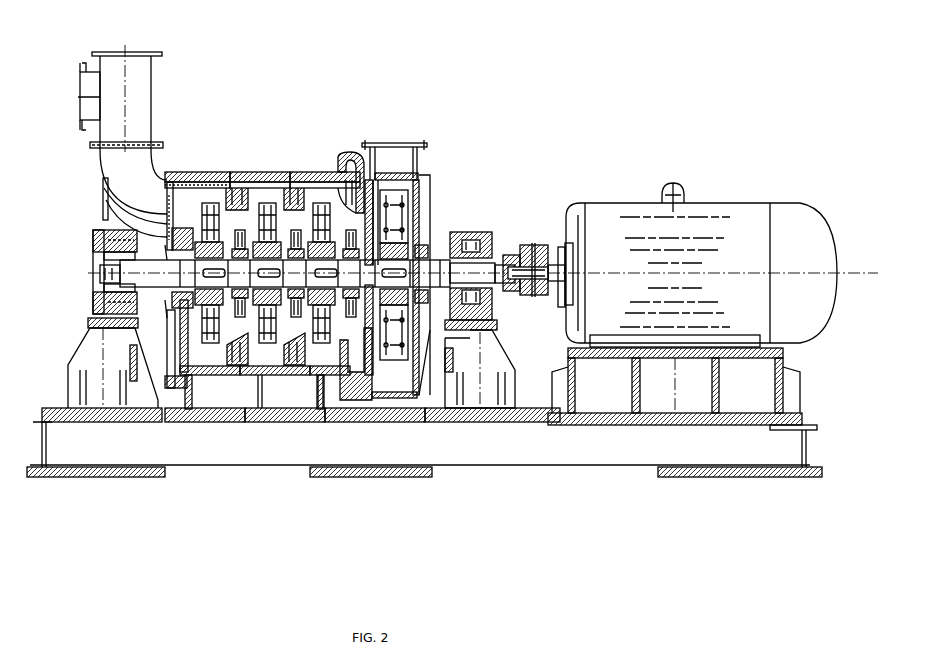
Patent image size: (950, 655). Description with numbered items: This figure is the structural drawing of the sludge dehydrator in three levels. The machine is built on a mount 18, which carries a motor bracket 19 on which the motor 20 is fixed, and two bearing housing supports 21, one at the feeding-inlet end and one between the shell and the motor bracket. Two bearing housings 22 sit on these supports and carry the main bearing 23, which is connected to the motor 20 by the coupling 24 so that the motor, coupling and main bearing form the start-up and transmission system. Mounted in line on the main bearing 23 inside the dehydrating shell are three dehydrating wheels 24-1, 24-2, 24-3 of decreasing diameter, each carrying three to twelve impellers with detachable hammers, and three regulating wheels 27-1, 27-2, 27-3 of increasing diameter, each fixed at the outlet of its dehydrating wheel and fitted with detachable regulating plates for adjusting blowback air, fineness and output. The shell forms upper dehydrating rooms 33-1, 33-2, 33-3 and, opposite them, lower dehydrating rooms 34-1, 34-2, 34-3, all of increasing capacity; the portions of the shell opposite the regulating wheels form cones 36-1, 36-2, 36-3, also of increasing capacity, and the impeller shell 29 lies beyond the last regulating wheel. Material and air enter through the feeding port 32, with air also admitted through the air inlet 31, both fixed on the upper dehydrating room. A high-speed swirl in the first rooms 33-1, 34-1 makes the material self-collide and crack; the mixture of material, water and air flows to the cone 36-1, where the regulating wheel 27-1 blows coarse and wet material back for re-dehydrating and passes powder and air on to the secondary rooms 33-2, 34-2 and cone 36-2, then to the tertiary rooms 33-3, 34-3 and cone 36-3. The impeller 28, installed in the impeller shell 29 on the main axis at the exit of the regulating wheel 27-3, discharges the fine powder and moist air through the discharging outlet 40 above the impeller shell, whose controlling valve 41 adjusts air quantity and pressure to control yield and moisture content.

The mount 18 is at (806, 447).
The motor bracket 19 is at (775, 392).
The motor 20 is at (736, 213).
The bearing housings support 21 is at (509, 358).
The bearing housings 22 is at (476, 232).
The main bearing 23 is at (441, 256).
The coupling 24 is at (526, 246).
The dehydrating wheel 24-1 is at (207, 229).
The dehydrating wheel 24-2 is at (267, 229).
The dehydrating wheel 24-3 is at (326, 229).
The regulating wheel 27-1 is at (245, 226).
The regulating wheel 27-2 is at (303, 226).
The regulating wheel 27-3 is at (358, 229).
The impeller 28 is at (401, 233).
The impeller shell 29 is at (431, 193).
The air inlet 31 is at (103, 196).
The feeding port 32 is at (113, 58).
The up-dehydrating room 33-1 is at (209, 171).
The up-dehydrating room 33-2 is at (268, 171).
The up-dehydrating room 33-3 is at (330, 171).
The down-dehydrating room 34-1 is at (200, 395).
The down-dehydrating room 34-2 is at (262, 395).
The down-dehydrating room 34-3 is at (335, 395).
The cone 36-1 is at (226, 190).
The cone 36-2 is at (286, 190).
The cone 36-3 is at (352, 163).
The discharging outlet 40 is at (407, 159).
The controlling valve 41 is at (404, 143).